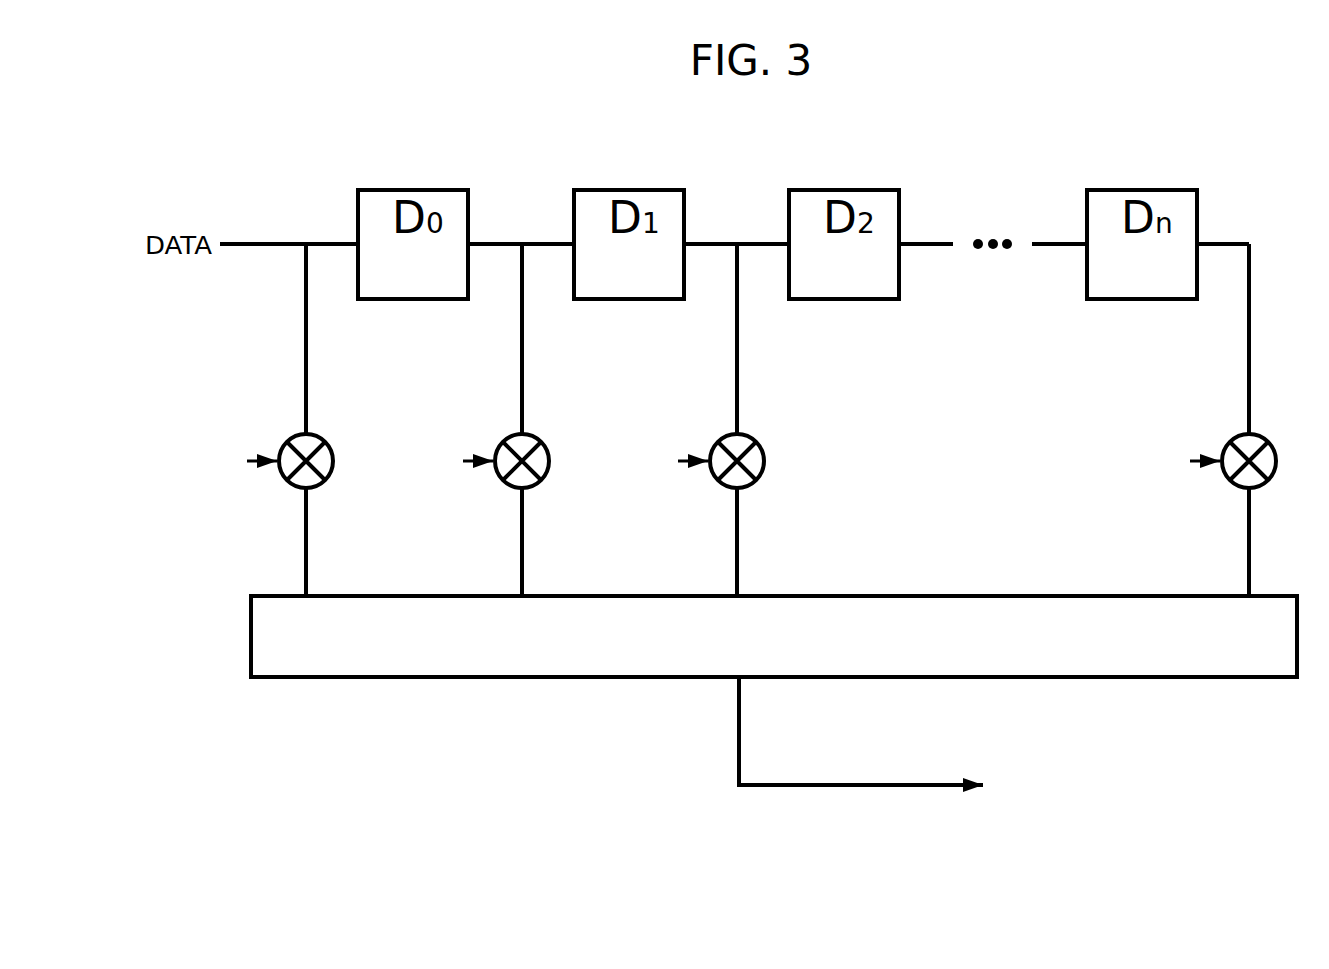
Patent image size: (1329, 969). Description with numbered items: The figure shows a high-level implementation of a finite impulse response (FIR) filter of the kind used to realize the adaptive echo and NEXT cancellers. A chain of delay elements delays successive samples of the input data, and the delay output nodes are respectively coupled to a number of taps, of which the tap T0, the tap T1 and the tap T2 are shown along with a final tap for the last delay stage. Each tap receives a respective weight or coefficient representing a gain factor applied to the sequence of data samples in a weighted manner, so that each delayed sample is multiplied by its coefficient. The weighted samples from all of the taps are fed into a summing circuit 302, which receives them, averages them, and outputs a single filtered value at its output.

The summing circuit 302 is at (752, 657).
The tap T0 is at (313, 437).
The tap T1 is at (529, 437).
The tap T2 is at (744, 437).